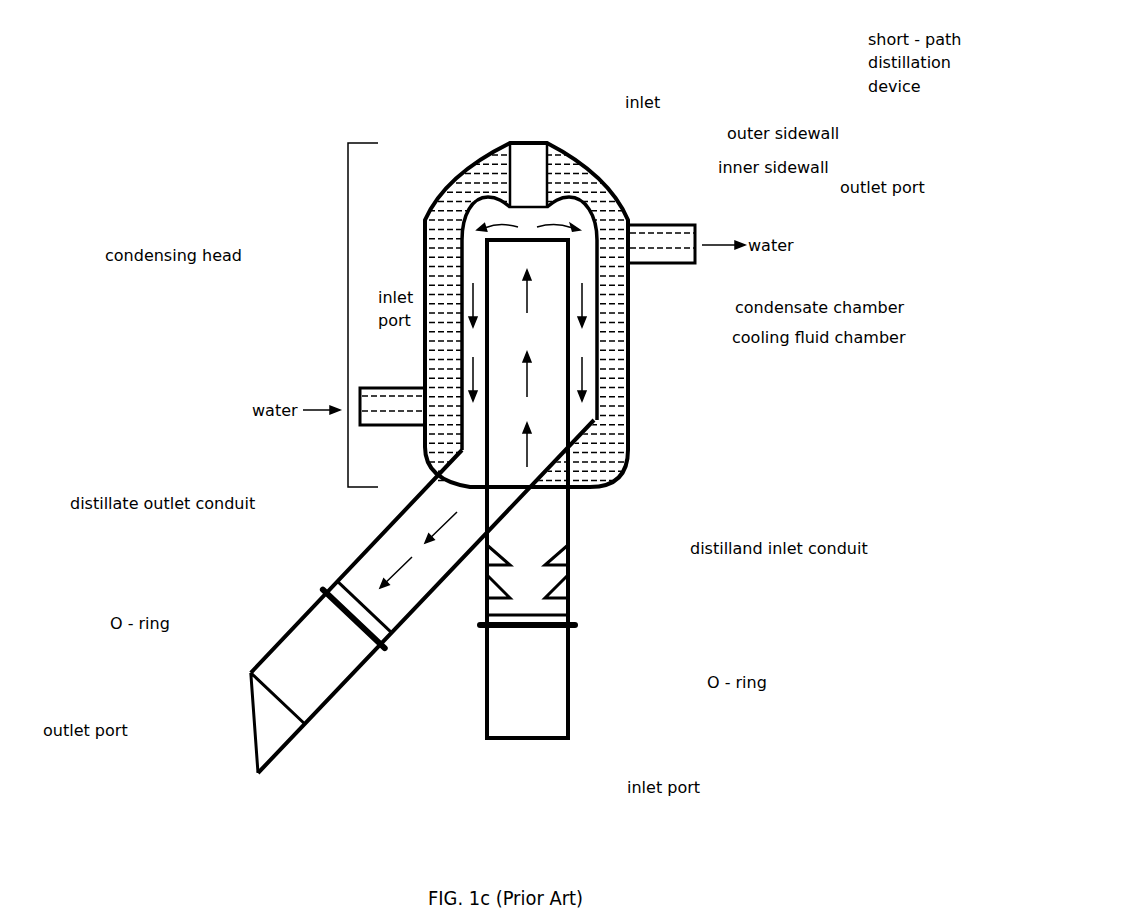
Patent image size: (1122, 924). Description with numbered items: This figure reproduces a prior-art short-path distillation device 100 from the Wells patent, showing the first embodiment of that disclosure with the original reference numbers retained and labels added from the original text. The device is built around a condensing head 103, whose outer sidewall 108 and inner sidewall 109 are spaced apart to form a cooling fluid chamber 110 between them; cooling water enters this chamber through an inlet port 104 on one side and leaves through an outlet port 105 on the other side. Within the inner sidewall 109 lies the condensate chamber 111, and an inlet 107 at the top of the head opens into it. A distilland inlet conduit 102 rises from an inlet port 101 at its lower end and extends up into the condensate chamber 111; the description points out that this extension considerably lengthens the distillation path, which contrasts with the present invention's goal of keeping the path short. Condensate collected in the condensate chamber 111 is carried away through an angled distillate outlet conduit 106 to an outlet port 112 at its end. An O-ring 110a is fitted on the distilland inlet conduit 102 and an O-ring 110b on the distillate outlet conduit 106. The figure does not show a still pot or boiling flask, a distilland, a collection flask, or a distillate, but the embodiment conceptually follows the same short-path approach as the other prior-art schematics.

The short-path distillation device 100 is at (771, 97).
The inlet port 101 is at (527, 740).
The distilland inlet conduit 102 is at (570, 520).
The condensing head 103 is at (348, 277).
The inlet port 104 is at (397, 388).
The outlet port 105 is at (700, 222).
The distillate outlet conduit 106 is at (368, 545).
The inlet 107 is at (527, 145).
The outer sidewall 108 is at (592, 170).
The inner sidewall 109 is at (587, 220).
The cooling fluid chamber 110 is at (615, 352).
The O-ring 110a is at (550, 630).
The O-ring 110b is at (320, 601).
The condensate chamber 111 is at (585, 268).
The outlet port 112 is at (250, 710).